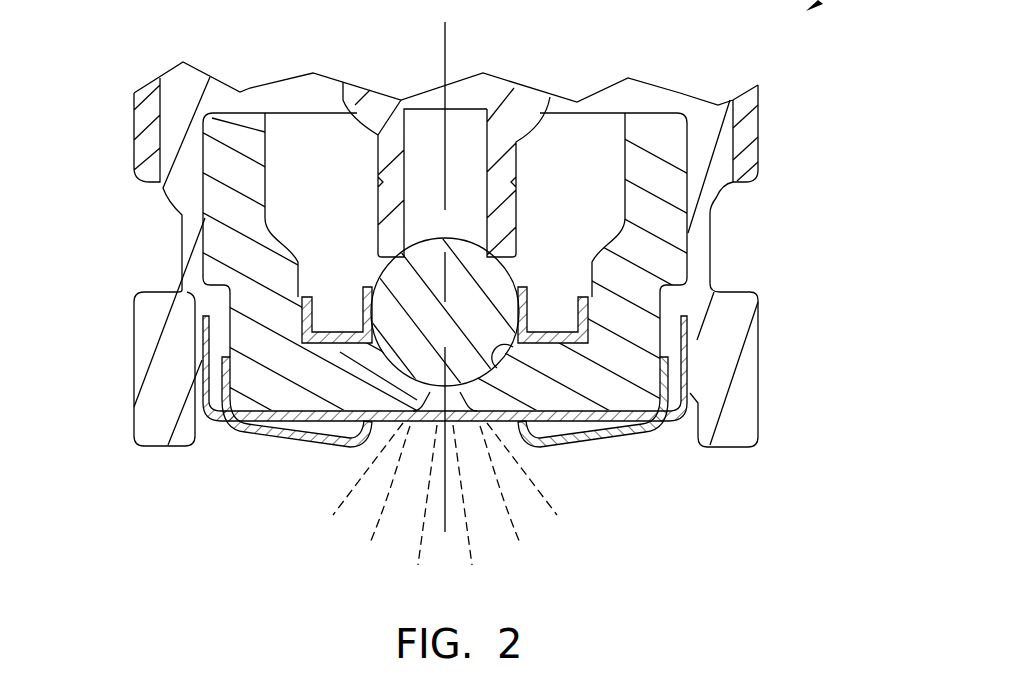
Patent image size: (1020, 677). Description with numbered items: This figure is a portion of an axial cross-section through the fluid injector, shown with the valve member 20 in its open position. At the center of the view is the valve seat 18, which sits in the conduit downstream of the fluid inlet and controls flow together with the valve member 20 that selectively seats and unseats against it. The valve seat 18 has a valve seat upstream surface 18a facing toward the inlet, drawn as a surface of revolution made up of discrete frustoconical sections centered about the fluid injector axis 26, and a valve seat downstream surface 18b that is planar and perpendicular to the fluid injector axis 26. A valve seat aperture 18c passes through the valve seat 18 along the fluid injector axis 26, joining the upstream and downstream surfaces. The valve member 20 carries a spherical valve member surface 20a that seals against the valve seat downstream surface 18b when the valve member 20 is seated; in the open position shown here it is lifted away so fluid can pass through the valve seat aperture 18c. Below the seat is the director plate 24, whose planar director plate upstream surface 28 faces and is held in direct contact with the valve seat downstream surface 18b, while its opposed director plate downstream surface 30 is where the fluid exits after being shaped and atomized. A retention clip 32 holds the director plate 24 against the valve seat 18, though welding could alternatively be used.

The valve seat 18 is at (668, 230).
The valve seat upstream surface 18a is at (497, 368).
The valve seat downstream surface 18b is at (372, 412).
The valve seat aperture 18c is at (408, 424).
The valve member 20 is at (400, 282).
The valve member surface 20a is at (378, 372).
The director plate 24 is at (517, 335).
The fluid injector axis 26 is at (447, 52).
The director plate upstream surface 28 is at (355, 388).
The director plate downstream surface 30 is at (483, 423).
The retention clip 32 is at (212, 422).